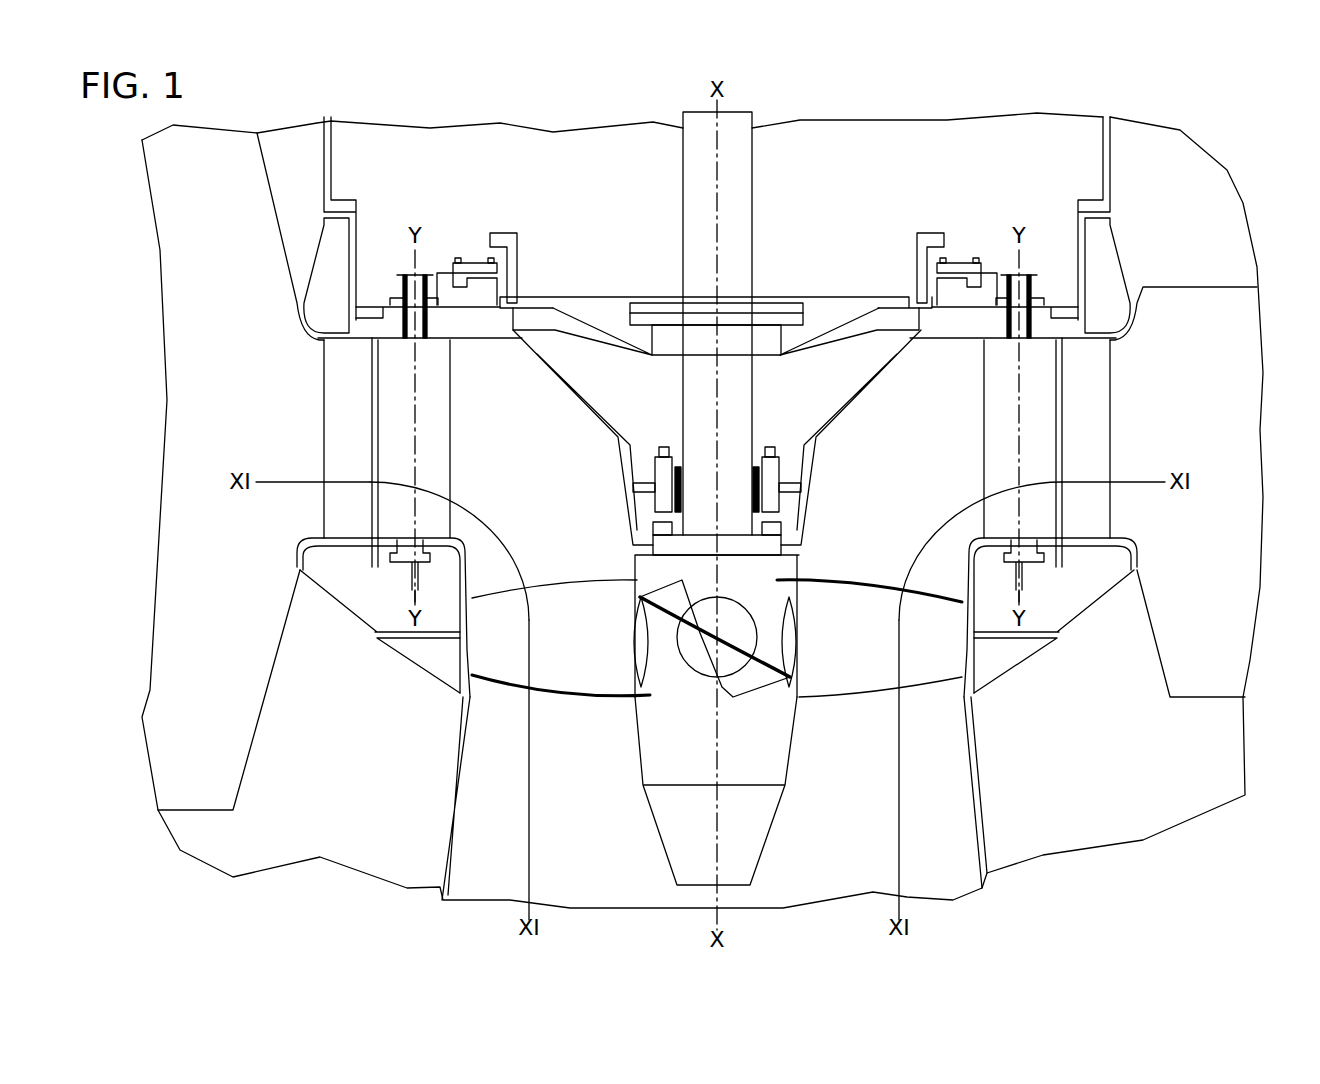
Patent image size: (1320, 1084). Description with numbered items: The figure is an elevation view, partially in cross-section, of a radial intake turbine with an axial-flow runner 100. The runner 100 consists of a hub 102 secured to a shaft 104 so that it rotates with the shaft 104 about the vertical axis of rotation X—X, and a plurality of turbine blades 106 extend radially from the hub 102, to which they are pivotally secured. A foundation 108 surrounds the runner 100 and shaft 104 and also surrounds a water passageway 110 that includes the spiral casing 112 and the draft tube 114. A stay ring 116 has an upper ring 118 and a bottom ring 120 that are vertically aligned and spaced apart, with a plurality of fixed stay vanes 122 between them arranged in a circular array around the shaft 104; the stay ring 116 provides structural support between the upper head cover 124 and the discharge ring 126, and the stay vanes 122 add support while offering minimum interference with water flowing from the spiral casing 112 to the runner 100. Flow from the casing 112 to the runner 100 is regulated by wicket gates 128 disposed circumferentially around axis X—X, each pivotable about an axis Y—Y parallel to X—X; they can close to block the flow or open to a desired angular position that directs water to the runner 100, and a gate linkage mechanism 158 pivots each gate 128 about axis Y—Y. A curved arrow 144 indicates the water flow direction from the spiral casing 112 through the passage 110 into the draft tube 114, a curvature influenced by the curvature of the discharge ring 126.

The axial-flow runner 100 is at (797, 767).
The hub 102 is at (680, 686).
The shaft 104 is at (753, 190).
The turbine blades 106 is at (605, 578).
The foundation 108 is at (330, 753).
The water passageway 110 is at (565, 463).
The spiral casing 112 is at (1240, 421).
The draft tube 114 is at (608, 821).
The stay ring 116 is at (322, 433).
The upper ring 118 is at (312, 340).
The bottom ring 120 is at (312, 540).
The fixed stay vanes 122 is at (342, 383).
The head cover 124 is at (440, 328).
The discharge ring 126 is at (468, 582).
The wicket gates 128 is at (432, 428).
The curved arrow 144 is at (490, 522).
The gate linkage mechanism 158 is at (477, 263).